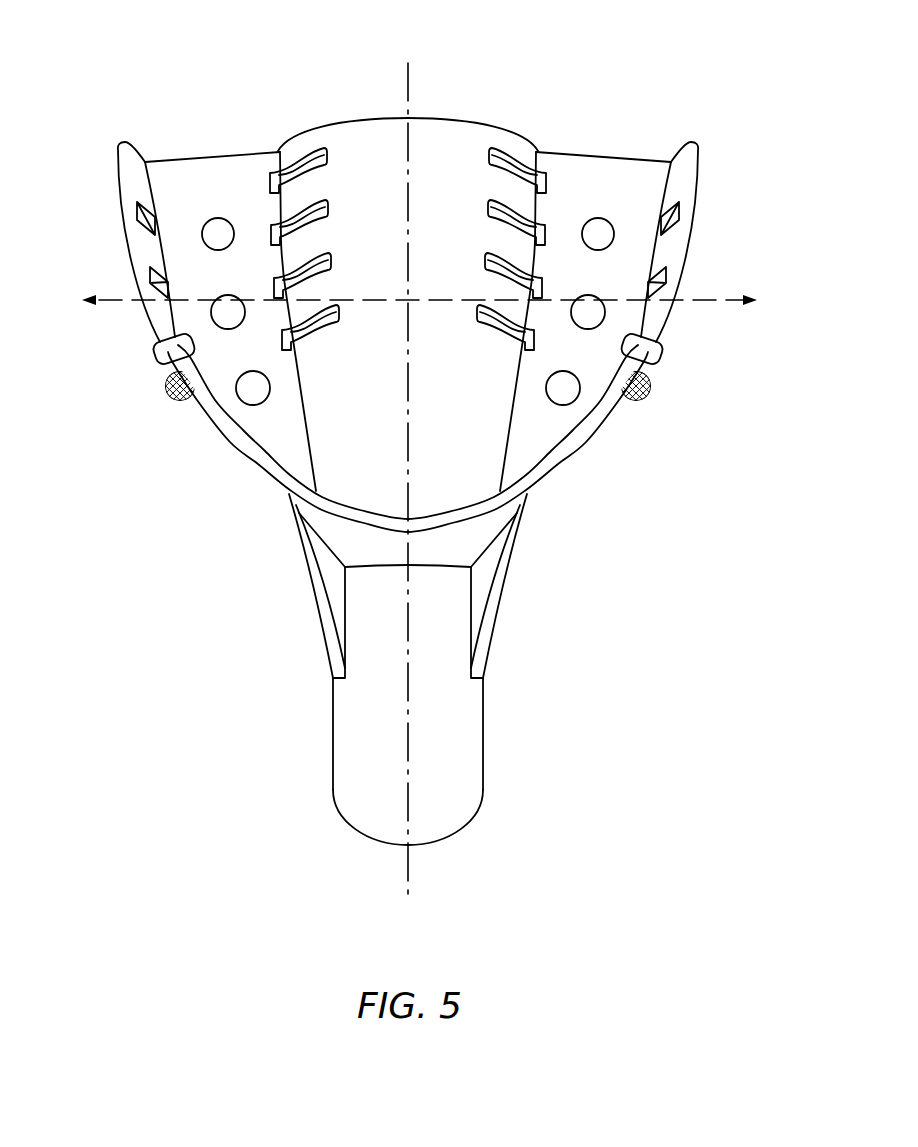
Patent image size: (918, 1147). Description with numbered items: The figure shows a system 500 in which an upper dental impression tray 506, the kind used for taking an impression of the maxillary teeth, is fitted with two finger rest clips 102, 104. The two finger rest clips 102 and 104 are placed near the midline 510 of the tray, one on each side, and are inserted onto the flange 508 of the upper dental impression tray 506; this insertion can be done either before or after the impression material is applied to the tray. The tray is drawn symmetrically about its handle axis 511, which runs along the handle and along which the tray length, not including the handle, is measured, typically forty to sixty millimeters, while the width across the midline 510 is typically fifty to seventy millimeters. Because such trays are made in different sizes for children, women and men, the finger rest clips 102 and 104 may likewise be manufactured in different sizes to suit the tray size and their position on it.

The system 500 is at (657, 93).
The upper dental impression tray 506 is at (215, 174).
The flange 508 is at (688, 193).
The midline 510 is at (698, 297).
The handle axis 511 is at (407, 873).
The finger rest clip 102 is at (160, 344).
The finger rest clip 104 is at (653, 337).